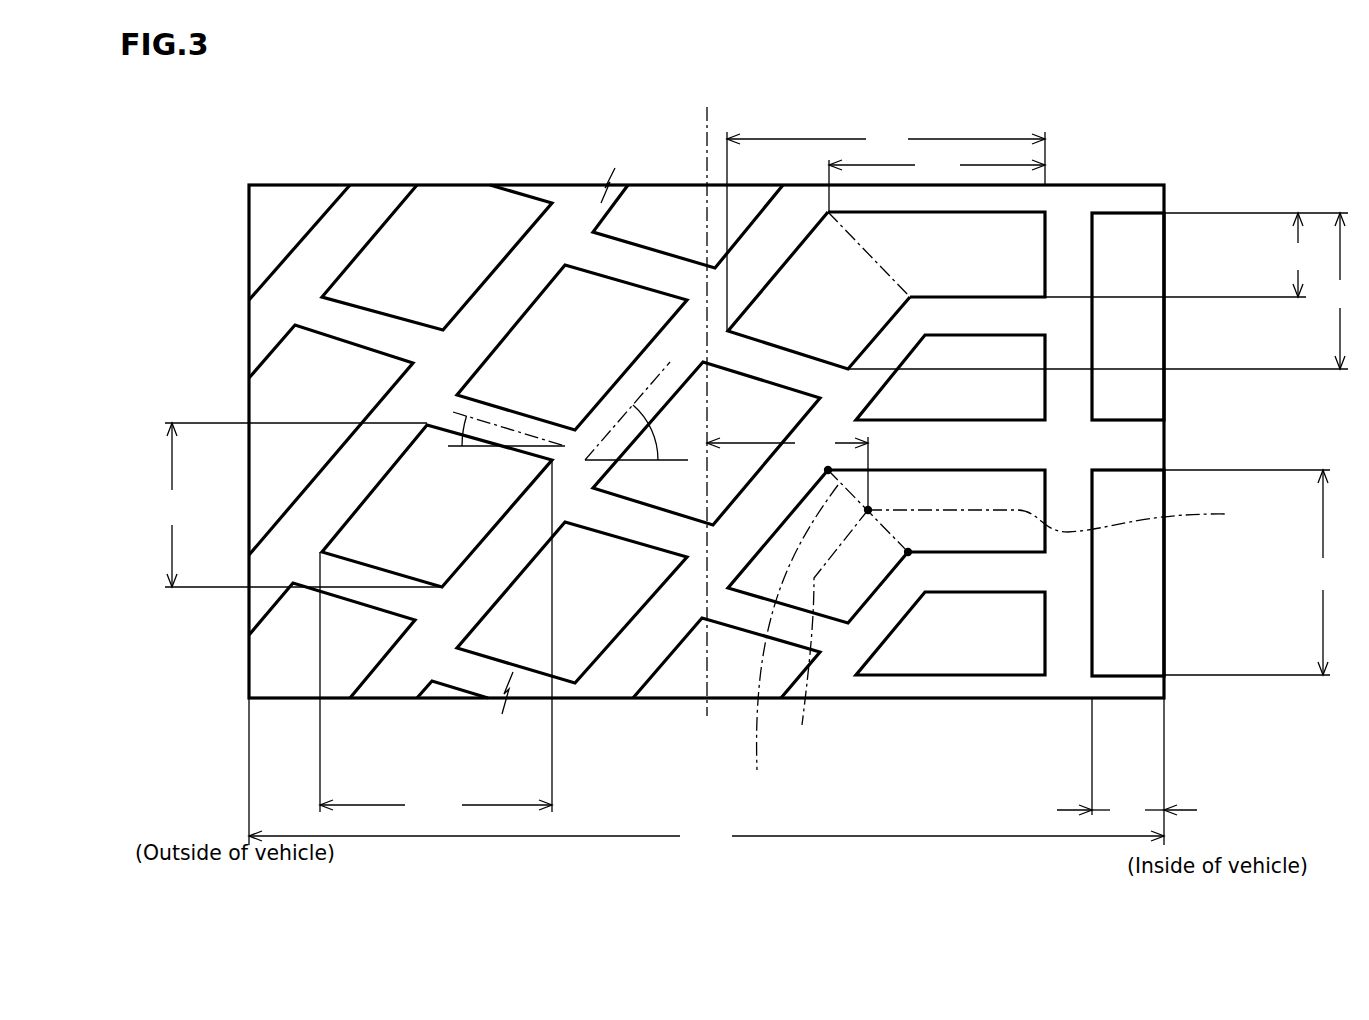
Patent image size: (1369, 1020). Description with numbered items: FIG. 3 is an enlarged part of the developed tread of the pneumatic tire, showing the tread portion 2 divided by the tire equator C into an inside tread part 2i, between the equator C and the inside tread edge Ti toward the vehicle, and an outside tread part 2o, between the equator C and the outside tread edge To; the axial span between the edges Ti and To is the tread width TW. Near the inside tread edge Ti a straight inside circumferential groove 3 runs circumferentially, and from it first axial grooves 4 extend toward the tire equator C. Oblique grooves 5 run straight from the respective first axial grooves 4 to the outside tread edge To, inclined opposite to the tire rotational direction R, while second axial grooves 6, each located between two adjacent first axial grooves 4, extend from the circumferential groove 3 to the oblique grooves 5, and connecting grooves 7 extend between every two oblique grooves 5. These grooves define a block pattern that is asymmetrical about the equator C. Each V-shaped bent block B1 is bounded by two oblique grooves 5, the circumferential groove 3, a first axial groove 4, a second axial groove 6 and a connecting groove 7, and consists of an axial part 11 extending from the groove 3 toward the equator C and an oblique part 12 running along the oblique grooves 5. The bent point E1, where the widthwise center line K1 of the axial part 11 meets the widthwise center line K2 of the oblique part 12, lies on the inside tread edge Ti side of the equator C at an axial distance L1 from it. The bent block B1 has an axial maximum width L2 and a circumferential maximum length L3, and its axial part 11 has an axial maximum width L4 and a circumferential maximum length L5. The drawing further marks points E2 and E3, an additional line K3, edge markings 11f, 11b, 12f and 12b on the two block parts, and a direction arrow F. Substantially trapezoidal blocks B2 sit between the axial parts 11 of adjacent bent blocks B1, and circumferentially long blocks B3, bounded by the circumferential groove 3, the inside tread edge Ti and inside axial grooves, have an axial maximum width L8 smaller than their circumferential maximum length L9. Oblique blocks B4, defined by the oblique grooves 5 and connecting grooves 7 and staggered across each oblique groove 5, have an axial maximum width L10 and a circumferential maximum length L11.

The tread portion 2 is at (1188, 139).
The outside tread part 2o is at (253, 128).
The inside tread part 2i is at (1162, 134).
The inside circumferential groove 3 is at (1070, 652).
The 1st axial grooves 4 is at (1019, 580).
The oblique grooves 5 is at (260, 599).
The 2nd axial grooves 6 is at (1011, 194).
The connecting grooves 7 is at (373, 328).
The axial part 11 is at (994, 260).
The oblique part 12 is at (850, 314).
The front edge of main block portion 11f is at (1018, 469).
The rear edge of main block portion 11b is at (1020, 554).
The front end of protruding portion 12f is at (743, 570).
The rear end of protruding portion 12b is at (868, 510).
The bent block B1 is at (1025, 523).
The trapezoidal block B2 is at (950, 505).
The circumferentially long block B3 is at (1128, 444).
The oblique block B4 is at (534, 434).
The tire equator C is at (707, 398).
The bent point E1 is at (908, 552).
The edge point E2 is at (828, 470).
The edge point E3 is at (908, 552).
The widthwise center line of the axial part K1 is at (1066, 517).
The widthwise center line of the oblique part K2 is at (826, 630).
The reference line K3 is at (775, 643).
The forward rotation direction F is at (215, 114).
The tire rotational direction R is at (1293, 415).
The outside tread edge To is at (248, 684).
The inside tread edge Ti is at (1164, 690).
The tread width TW is at (706, 774).
The axial distance between the bent point and the tire equator L1 is at (787, 469).
The axial maximum width of the bent block L2 is at (886, 227).
The circumferential maximum length of the bent block L3 is at (1102, 291).
The axial maximum width of the axial part L4 is at (937, 181).
The circumferential maximum length of the axial part L5 is at (1179, 255).
The axial maximum width of the circumferentially long block L8 is at (1127, 762).
The circumferential maximum length of the circumferentially long block L9 is at (1251, 572).
The axial maximum width of the oblique block L10 is at (436, 639).
The circumferential maximum length of the oblique block L11 is at (295, 505).